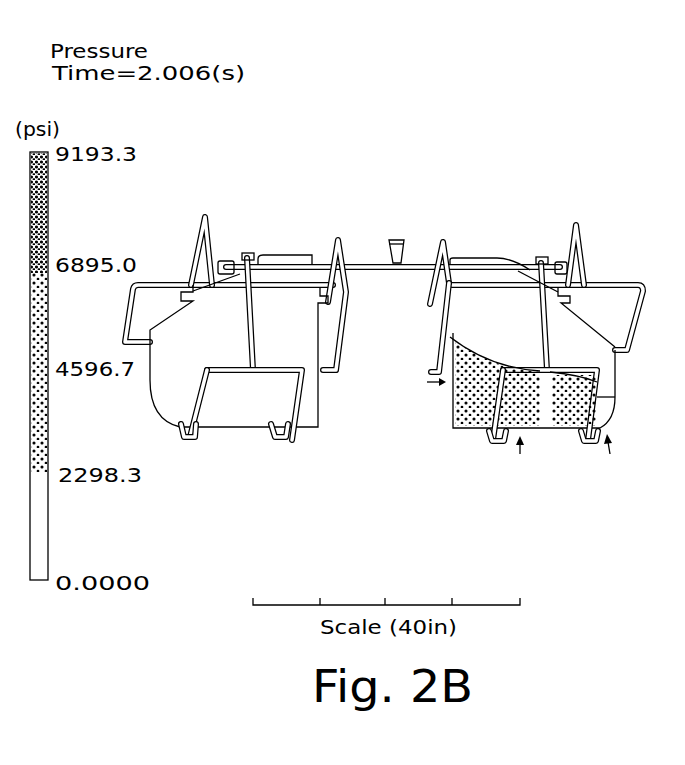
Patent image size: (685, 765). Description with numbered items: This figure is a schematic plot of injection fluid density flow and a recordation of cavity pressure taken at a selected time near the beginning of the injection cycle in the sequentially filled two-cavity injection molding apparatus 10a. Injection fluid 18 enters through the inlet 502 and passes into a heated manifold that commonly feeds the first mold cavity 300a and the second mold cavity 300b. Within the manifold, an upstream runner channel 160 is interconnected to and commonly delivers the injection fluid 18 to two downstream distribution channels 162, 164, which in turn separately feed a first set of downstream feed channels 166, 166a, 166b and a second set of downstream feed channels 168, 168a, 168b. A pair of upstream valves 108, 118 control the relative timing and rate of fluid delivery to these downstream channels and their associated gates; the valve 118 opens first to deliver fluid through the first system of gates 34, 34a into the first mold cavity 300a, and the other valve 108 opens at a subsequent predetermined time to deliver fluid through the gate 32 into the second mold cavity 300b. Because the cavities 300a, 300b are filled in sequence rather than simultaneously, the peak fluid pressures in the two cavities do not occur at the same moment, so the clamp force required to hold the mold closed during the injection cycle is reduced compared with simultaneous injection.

The injection molding apparatus 10a is at (570, 502).
The injection fluid 18 is at (399, 230).
The gate 32 is at (263, 435).
The gate 34 is at (588, 442).
The gate 34a is at (497, 442).
The upstream valve 108 is at (242, 252).
The upstream valve 118 is at (528, 260).
The upstream runner channel 160 is at (418, 263).
The downstream distribution channel 162 is at (277, 256).
The downstream distribution channel 164 is at (593, 283).
The downstream feed channel 166 is at (592, 412).
The downstream feed channel 166a is at (497, 410).
The downstream feed channel 166b is at (440, 340).
The downstream feed channel 168 is at (295, 413).
The downstream feed channel 168a is at (198, 403).
The downstream feed channel 168b is at (192, 258).
The first mold cavity 300a is at (455, 402).
The second mold cavity 300b is at (148, 388).
The inlet 502 is at (390, 260).